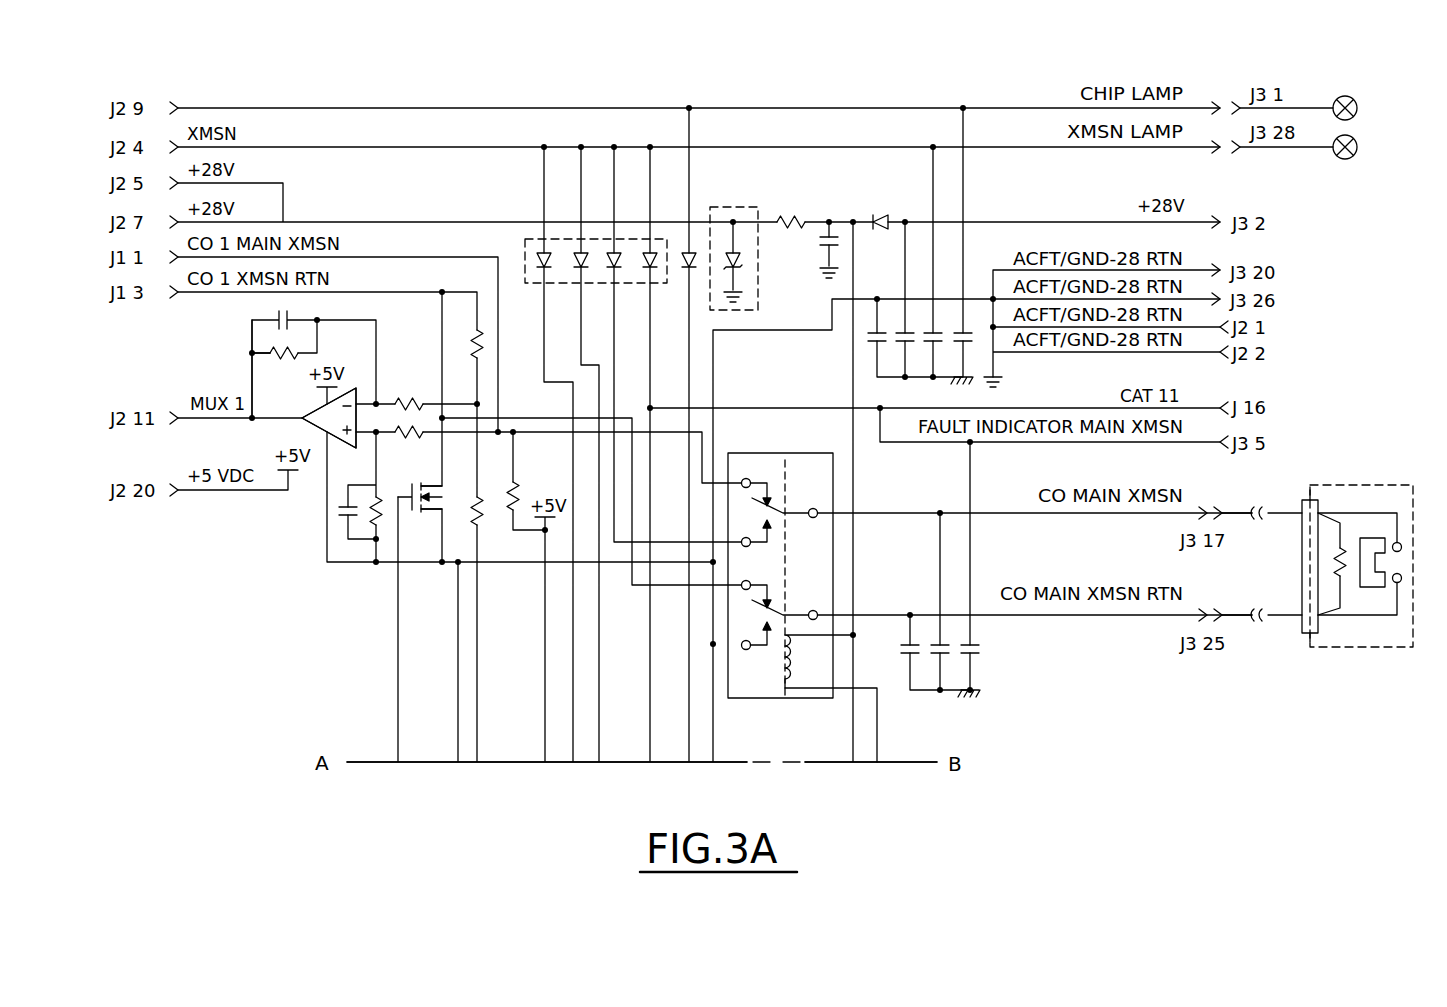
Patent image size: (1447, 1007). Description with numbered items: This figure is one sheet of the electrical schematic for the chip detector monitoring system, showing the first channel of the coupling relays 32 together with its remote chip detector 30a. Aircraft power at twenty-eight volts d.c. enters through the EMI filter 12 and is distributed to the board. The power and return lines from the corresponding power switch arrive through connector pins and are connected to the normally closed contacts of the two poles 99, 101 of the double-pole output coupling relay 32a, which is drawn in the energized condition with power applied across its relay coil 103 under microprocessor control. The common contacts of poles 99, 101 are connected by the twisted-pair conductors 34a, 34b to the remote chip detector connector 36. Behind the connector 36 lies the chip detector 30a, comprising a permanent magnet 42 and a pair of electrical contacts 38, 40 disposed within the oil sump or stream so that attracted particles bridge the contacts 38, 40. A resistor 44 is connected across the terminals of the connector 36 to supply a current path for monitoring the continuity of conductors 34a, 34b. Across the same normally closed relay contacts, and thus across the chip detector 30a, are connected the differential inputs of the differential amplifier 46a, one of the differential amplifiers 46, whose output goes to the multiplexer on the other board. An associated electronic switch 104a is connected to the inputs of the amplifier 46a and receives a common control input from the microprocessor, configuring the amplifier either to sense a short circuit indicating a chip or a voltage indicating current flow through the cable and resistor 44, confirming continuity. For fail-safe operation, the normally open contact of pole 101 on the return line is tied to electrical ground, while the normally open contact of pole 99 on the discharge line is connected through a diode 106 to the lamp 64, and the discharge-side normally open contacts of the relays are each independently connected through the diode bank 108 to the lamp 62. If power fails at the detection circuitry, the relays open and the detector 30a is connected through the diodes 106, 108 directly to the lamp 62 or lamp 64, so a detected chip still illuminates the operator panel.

The EMI filter 12 is at (791, 202).
The chip detector 30a is at (1368, 579).
The coupling relays 32 is at (746, 741).
The output coupling relay 32a is at (833, 607).
The twisted-pair conductor 34a is at (1237, 511).
The twisted-pair conductor 34b is at (1275, 612).
The chip detector connector 36 is at (1308, 497).
The electrical contact 38 is at (1401, 543).
The electrical contact 40 is at (1401, 582).
The permanent magnet 42 is at (1368, 588).
The resistor 44 is at (1343, 577).
The differential amplifiers 46 is at (274, 505).
The differential amplifier 46a is at (322, 435).
The lamp 62 is at (1358, 144).
The lamp 64 is at (1354, 100).
The relay pole 99 is at (777, 502).
The relay pole 101 is at (777, 602).
The relay coil 103 is at (793, 675).
The electronic switch 104a is at (403, 537).
The diode 106 is at (690, 253).
The diode bank 108 is at (530, 238).